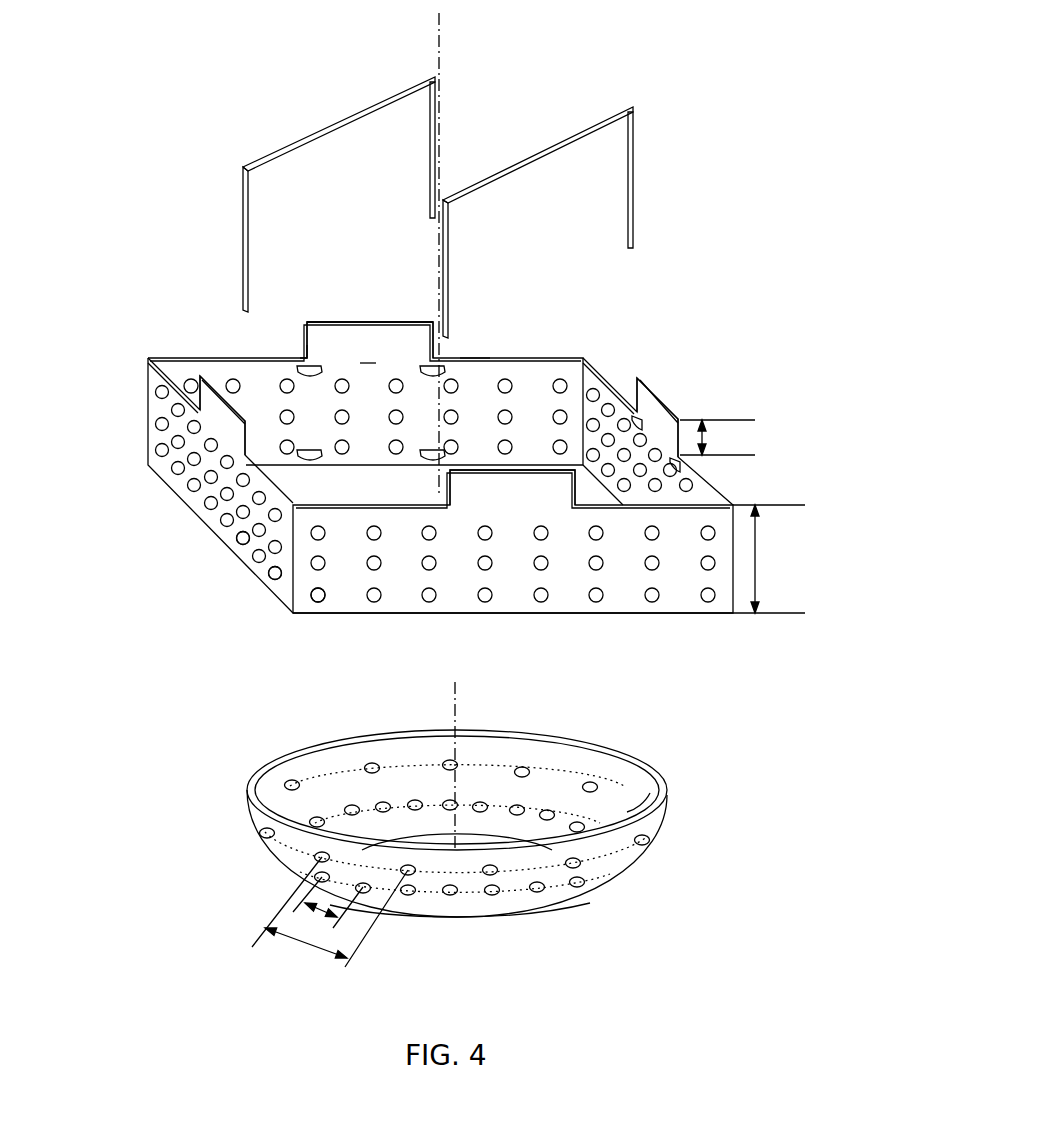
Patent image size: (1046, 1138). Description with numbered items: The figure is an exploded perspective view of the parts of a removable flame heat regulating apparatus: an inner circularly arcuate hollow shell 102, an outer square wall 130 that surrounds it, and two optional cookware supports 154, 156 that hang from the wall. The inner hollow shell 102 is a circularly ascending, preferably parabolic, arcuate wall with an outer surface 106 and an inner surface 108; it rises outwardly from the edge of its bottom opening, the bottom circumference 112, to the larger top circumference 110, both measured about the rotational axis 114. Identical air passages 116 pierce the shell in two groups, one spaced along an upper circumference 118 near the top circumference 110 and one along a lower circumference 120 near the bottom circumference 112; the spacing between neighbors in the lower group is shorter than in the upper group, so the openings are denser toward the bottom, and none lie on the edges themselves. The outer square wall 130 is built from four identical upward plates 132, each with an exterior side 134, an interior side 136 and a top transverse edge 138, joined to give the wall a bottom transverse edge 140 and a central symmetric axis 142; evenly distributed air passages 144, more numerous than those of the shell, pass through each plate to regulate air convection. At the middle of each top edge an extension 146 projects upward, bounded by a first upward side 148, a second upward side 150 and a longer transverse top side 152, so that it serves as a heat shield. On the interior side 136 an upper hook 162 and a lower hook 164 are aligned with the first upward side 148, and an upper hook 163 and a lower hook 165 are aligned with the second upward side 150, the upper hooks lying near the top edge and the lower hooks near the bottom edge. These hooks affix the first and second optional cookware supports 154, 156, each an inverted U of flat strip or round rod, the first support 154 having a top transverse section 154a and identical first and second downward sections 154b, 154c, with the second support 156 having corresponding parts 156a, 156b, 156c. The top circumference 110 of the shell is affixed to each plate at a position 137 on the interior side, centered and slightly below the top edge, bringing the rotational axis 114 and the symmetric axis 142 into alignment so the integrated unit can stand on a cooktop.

The inner circularly arcuate hollow shell 102 is at (178, 743).
The outer surface 106 is at (620, 877).
The inner surface 108 is at (325, 757).
The top circumference 110 is at (572, 742).
The bottom circumference 112 is at (490, 917).
The rotational axis 114 is at (458, 722).
The air passages 116 is at (262, 832).
The upper circumference 118 is at (655, 782).
The lower circumference 120 is at (314, 877).
The outer square wall 130 is at (135, 350).
The upward plate 132 is at (208, 497).
The exterior side 134 is at (642, 558).
The interior side 136 is at (550, 439).
The affixation position 137 is at (368, 363).
The top transverse edge 138 is at (530, 358).
The bottom transverse edge 140 is at (673, 613).
The central symmetric axis 142 is at (440, 62).
The air passages 144 is at (243, 540).
The extension 146 is at (360, 352).
The first upward side 148 is at (302, 356).
The second upward side 150 is at (443, 372).
The transverse top side 152 is at (368, 322).
The first optional cookware support 154 is at (338, 112).
The top transverse section 154a is at (305, 134).
The first downward section 154b is at (245, 228).
The second downward section 154c is at (430, 135).
The second optional cookware support 156 is at (538, 148).
The top edge of second divider 156a is at (480, 175).
The right edge of second divider 156b is at (633, 187).
The left edge of second divider 156c is at (447, 278).
The upper hook 162 is at (297, 368).
The upper hook 163 is at (472, 358).
The lower hook 164 is at (307, 463).
The lower hook 165 is at (425, 463).